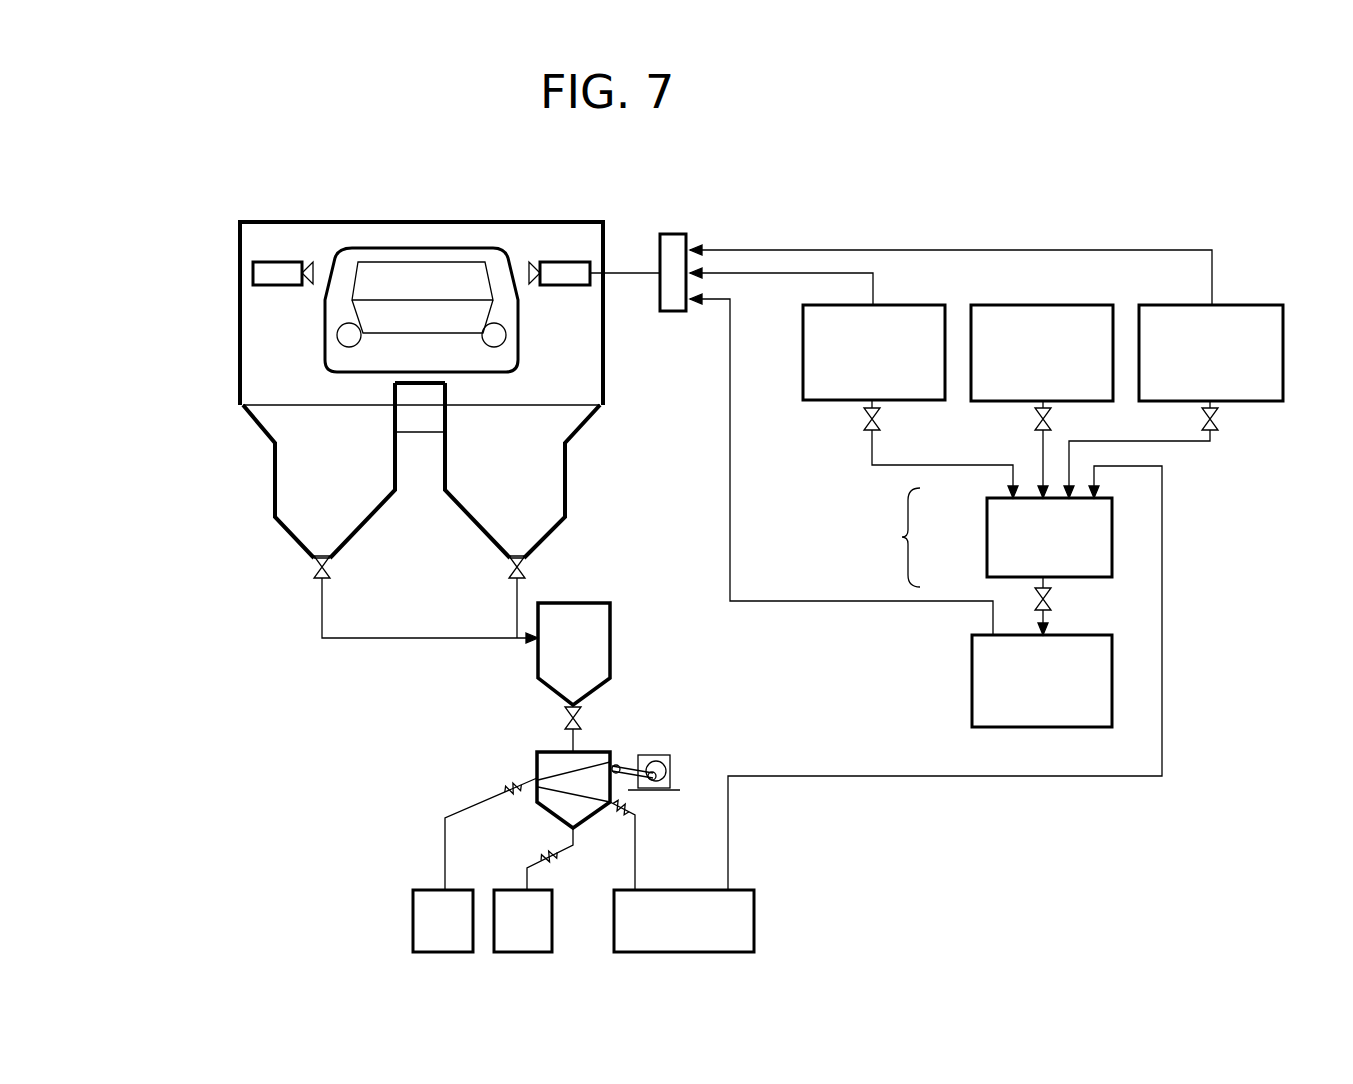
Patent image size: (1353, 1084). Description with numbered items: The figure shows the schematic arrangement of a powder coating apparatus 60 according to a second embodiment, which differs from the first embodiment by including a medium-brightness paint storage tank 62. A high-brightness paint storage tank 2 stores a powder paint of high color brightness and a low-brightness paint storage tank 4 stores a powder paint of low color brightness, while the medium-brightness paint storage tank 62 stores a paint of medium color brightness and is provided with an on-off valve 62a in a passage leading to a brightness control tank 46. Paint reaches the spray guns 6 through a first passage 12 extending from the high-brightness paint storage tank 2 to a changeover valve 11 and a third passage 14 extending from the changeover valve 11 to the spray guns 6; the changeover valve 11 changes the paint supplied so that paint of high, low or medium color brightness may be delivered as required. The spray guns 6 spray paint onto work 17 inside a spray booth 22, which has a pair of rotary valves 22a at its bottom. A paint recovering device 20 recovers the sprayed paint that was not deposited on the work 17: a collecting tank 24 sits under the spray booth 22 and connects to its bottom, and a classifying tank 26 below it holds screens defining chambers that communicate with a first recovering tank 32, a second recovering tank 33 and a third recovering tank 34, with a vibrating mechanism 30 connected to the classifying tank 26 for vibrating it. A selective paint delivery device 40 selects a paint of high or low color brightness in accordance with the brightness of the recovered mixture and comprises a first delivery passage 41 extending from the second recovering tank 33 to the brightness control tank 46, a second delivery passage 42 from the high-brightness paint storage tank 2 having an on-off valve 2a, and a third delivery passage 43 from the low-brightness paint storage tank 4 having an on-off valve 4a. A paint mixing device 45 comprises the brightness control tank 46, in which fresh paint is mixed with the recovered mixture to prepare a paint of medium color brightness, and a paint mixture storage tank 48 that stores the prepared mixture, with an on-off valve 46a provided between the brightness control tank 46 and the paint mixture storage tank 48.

The high-brightness paint storage tank 2 is at (897, 317).
The on-off valve 2a is at (862, 420).
The low-brightness paint storage tank 4 is at (1232, 318).
The on-off valve 4a is at (1222, 420).
The spray guns 6 is at (287, 262).
The changeover valve 11 is at (675, 234).
The first passage 12 is at (781, 273).
The third passage 14 is at (1032, 250).
The work 17 is at (416, 248).
The paint recovering device 20 is at (500, 751).
The spray booth 22 is at (240, 336).
The rotary valves 22a is at (313, 567).
The collecting tank 24 is at (597, 624).
The classifying tank 26 is at (550, 752).
The vibrating mechanism 30 is at (676, 745).
The first recovering tank 32 is at (420, 918).
The second recovering tank 33 is at (747, 920).
The third recovering tank 34 is at (537, 915).
The selective paint delivery device 40 is at (1222, 542).
The first delivery passage 41 is at (1163, 588).
The second delivery passage 42 is at (873, 462).
The third delivery passage 43 is at (1198, 442).
The paint mixing device 45 is at (890, 537).
The brightness control tank 46 is at (1000, 520).
The on-off valve 46a is at (1055, 600).
The paint mixture storage tank 48 is at (985, 635).
The powder coating apparatus 60 is at (891, 215).
The medium-brightness paint storage tank 62 is at (1047, 320).
The on-off valve 62a is at (1030, 420).